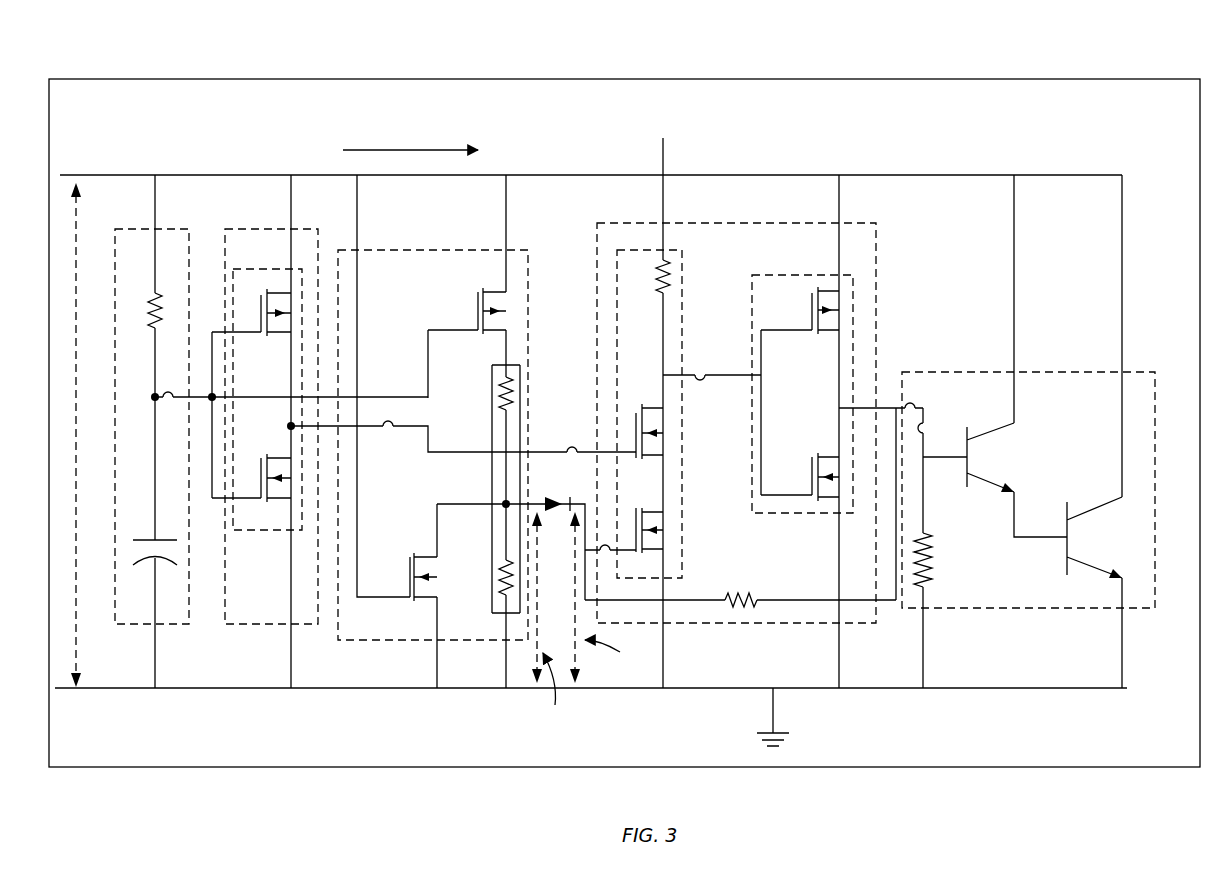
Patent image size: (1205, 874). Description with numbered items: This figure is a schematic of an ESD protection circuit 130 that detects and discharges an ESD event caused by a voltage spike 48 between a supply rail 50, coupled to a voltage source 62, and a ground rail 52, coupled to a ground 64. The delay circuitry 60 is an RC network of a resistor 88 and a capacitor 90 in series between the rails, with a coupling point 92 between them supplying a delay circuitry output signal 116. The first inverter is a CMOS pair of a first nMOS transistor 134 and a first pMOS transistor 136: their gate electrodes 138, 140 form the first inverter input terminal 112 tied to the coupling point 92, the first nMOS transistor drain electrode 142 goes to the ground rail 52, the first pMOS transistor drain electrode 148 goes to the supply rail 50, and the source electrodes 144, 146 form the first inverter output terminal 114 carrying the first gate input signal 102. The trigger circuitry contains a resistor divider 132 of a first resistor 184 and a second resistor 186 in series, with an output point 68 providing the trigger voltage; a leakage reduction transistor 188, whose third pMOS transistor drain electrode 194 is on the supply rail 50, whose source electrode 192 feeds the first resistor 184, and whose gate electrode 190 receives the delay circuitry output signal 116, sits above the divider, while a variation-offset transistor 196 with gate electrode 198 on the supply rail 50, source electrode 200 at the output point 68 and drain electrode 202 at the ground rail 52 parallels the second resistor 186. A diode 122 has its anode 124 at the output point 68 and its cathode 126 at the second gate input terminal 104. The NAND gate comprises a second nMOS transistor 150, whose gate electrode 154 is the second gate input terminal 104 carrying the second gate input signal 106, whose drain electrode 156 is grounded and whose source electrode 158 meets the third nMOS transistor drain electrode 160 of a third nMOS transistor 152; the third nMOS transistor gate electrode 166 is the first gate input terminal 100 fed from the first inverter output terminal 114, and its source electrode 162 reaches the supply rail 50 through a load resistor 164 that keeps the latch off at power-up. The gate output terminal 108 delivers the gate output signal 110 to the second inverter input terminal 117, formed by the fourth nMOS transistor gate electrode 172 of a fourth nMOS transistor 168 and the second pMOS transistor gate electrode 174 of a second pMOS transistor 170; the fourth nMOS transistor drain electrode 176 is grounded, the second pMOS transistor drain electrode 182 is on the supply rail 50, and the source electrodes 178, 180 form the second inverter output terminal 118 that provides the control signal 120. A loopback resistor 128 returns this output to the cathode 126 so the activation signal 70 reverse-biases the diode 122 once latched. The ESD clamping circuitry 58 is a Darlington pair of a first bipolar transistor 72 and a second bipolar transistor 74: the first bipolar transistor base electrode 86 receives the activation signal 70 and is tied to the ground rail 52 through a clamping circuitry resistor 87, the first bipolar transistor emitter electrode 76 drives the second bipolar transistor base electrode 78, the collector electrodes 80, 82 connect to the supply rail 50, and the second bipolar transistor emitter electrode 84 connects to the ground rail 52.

The ESD protection circuit 130 is at (1046, 79).
The supply rail 50 is at (122, 175).
The ground rail 52 is at (136, 690).
The voltage spike 48 is at (88, 229).
The voltage source 62 is at (697, 122).
The delay circuitry 60 is at (165, 229).
The resistor 88 is at (155, 300).
The capacitor 90 is at (143, 540).
The coupling point 92 is at (150, 390).
The first inverter input terminal 112 is at (200, 392).
The delay circuitry output signal 116 is at (168, 401).
The first pMOS transistor source electrode 146 is at (289, 336).
The first pMOS transistor gate electrode 140 is at (258, 322).
The first pMOS transistor 136 is at (282, 313).
The first pMOS transistor drain electrode 148 is at (290, 293).
The first nMOS transistor gate electrode 138 is at (258, 497).
The first nMOS transistor 134 is at (281, 478).
The first nMOS transistor drain electrode 142 is at (280, 499).
The first nMOS transistor source electrode 144 is at (288, 457).
The first inverter output terminal 114 is at (375, 431).
The first gate input signal 102 is at (392, 431).
The leakage reduction transistor 188 is at (497, 312).
The third pMOS transistor drain electrode 194 is at (496, 291).
The third pMOS transistor gate electrode 190 is at (447, 330).
The third pMOS transistor source electrode 192 is at (492, 332).
The resistor divider 132 is at (491, 397).
The first resistor 184 is at (510, 405).
The second resistor 186 is at (500, 600).
The fifth nMOS transistor gate electrode 198 is at (382, 597).
The variation-offset transistor 196 is at (427, 578).
The fifth nMOS transistor source electrode 200 is at (436, 556).
The fifth nMOS transistor drain electrode 202 is at (420, 598).
The output point 68 is at (500, 496).
The anode 124 is at (555, 500).
The cathode 126 is at (572, 500).
The diode 122 is at (550, 512).
The load resistor 164 is at (668, 292).
The first gate input terminal 100 is at (635, 420).
The third nMOS transistor gate electrode 166 is at (636, 418).
The third nMOS transistor source electrode 162 is at (664, 409).
The third nMOS transistor 152 is at (652, 433).
The third nMOS transistor drain electrode 160 is at (655, 455).
The second gate input terminal 104 is at (640, 552).
The second nMOS transistor gate electrode 154 is at (634, 520).
The second nMOS transistor source electrode 158 is at (656, 512).
The second nMOS transistor 150 is at (652, 530).
The second nMOS transistor drain electrode 156 is at (655, 549).
The second gate input signal 106 is at (606, 552).
The gate output terminal 108 is at (672, 372).
The gate output signal 110 is at (700, 377).
The second inverter input terminal 117 is at (736, 375).
The second pMOS transistor 170 is at (835, 310).
The second pMOS transistor drain electrode 182 is at (830, 291).
The second pMOS transistor gate electrode 174 is at (785, 331).
The second pMOS transistor source electrode 180 is at (826, 333).
The fourth nMOS transistor 168 is at (833, 478).
The fourth nMOS transistor source electrode 178 is at (826, 458).
The fourth nMOS transistor gate electrode 172 is at (789, 494).
The fourth nMOS transistor drain electrode 176 is at (828, 500).
The second inverter output terminal 118 is at (887, 408).
The control signal 120 is at (912, 404).
The loopback resistor 128 is at (742, 598).
The ESD clamping circuitry 58 is at (1135, 372).
The activation signal 70 is at (925, 430).
The clamping circuitry resistor 87 is at (932, 560).
The first bipolar transistor 72 is at (970, 462).
The first bipolar transistor base electrode 86 is at (946, 458).
The first bipolar transistor collector electrode 80 is at (1014, 392).
The first bipolar transistor emitter electrode 76 is at (1015, 508).
The second bipolar transistor 74 is at (1072, 548).
The second bipolar transistor collector electrode 82 is at (1122, 418).
The second bipolar transistor base electrode 78 is at (1034, 538).
The second bipolar transistor emitter electrode 84 is at (1122, 622).
The ground 64 is at (800, 733).